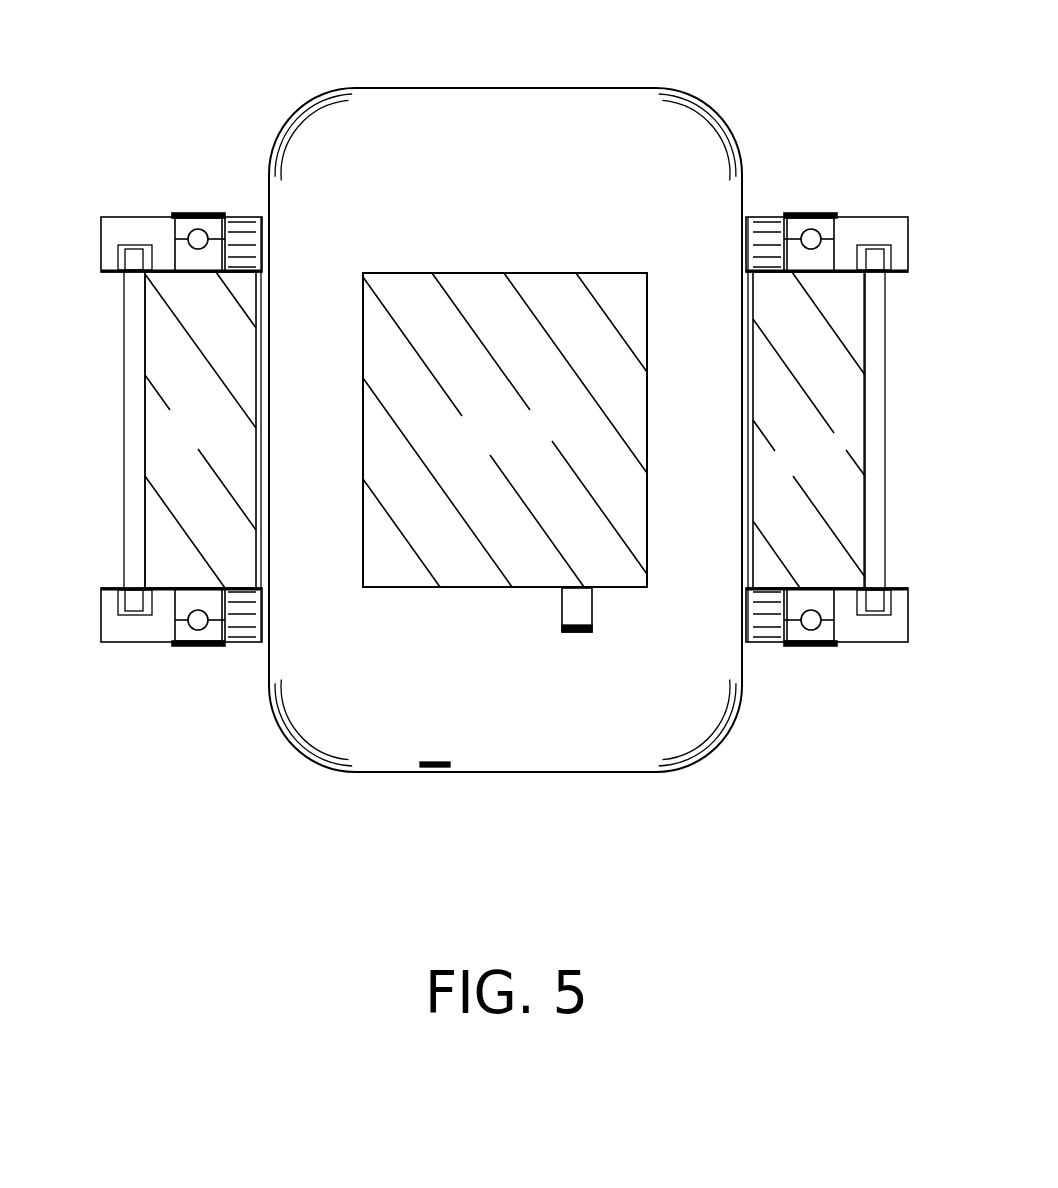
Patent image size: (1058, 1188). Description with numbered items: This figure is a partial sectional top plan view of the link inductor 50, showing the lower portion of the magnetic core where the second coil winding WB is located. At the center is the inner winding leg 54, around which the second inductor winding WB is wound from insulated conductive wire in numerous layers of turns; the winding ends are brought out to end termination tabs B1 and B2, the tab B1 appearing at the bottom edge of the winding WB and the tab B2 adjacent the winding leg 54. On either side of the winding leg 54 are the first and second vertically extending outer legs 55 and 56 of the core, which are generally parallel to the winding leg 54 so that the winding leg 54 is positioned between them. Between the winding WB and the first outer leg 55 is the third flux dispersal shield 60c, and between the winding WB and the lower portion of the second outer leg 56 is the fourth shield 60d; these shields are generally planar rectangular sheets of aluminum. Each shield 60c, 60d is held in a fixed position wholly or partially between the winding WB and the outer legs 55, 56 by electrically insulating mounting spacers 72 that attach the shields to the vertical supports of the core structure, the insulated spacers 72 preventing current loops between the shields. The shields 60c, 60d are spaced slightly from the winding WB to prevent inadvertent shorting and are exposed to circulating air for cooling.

The link inductor 50 is at (828, 51).
The second inductor winding WB is at (527, 192).
The inner winding leg 54 is at (522, 449).
The first outer leg 55 is at (215, 448).
The second outer leg 56 is at (823, 474).
The third shield 60c is at (256, 349).
The fourth shield 60d is at (755, 397).
The mounting spacers 72 is at (242, 240).
The winding end tab B1 is at (425, 760).
The winding end tab B2 is at (595, 615).